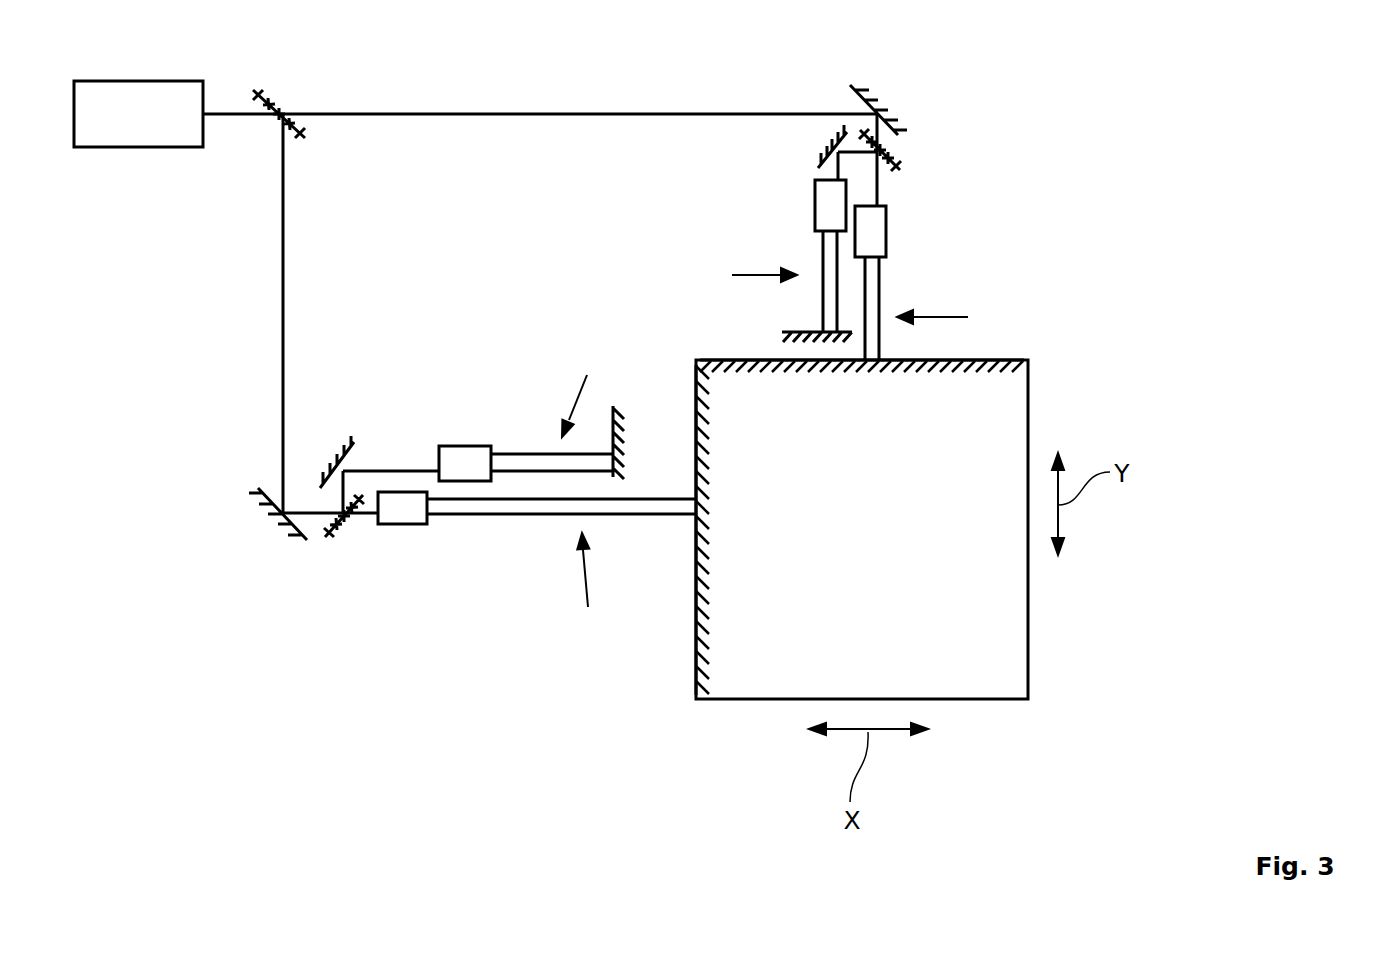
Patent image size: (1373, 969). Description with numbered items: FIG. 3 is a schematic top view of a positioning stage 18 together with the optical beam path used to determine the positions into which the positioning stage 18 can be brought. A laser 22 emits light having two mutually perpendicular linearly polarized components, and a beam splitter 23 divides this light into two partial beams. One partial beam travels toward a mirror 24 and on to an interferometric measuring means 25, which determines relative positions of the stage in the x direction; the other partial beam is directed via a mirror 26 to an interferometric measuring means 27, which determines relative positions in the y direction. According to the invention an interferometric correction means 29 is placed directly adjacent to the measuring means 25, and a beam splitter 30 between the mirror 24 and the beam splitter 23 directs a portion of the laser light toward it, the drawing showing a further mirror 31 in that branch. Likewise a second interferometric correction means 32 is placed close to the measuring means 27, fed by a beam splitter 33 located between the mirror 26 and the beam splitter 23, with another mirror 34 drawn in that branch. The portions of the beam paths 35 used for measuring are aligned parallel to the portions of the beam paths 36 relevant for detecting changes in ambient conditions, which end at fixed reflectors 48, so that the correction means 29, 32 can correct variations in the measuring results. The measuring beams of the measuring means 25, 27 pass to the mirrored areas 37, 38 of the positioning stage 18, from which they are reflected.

The positioning stage 18 is at (849, 536).
The laser 22 is at (122, 126).
The beam splitter 23 is at (270, 94).
The mirror 24 is at (305, 540).
The interferometric measuring means 25 is at (405, 525).
The mirror 26 is at (856, 88).
The interferometric measuring means 27 is at (886, 230).
The interferometric correction means 29 is at (465, 446).
The beam splitter 30 is at (330, 540).
The mirror 31 is at (352, 445).
The second interferometric correction means 32 is at (815, 215).
The beam splitter 33 is at (905, 165).
The mirror 34 is at (815, 160).
The beam paths used for measuring 35 is at (789, 469).
The beam paths relevant for detecting changes in ambient conditions 36 is at (679, 348).
The mirrored area 37 is at (700, 660).
The mirrored area 38 is at (908, 365).
The fixed reference mirror 48 is at (775, 335).